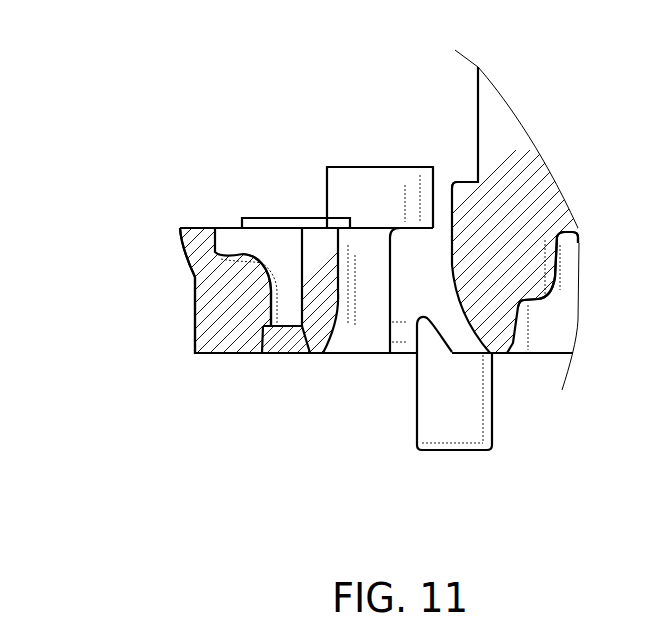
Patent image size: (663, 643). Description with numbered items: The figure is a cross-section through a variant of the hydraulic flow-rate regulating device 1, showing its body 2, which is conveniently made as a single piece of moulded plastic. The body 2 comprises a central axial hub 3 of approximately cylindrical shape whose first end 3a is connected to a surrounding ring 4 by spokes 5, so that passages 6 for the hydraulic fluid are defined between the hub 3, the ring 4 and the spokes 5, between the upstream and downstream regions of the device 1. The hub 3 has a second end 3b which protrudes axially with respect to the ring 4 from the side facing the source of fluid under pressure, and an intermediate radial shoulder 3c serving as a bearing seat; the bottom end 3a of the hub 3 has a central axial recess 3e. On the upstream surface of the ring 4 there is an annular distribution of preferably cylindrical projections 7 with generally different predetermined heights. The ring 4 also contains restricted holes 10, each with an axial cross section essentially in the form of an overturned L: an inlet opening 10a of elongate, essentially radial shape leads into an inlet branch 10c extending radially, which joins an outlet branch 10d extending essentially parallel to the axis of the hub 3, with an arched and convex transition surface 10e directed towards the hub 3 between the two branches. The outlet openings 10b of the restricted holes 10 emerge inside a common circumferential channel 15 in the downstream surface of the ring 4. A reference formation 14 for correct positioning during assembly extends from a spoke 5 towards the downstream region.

The hydraulic flow-rate regulating device 1 is at (277, 201).
The body 2 is at (195, 318).
The central axial hub 3 is at (478, 120).
The first end of hub 3a is at (515, 265).
The second end of hub 3b is at (505, 133).
The intermediate radial shoulder 3c is at (470, 182).
The central axial recess 3e is at (530, 303).
The ring 4 is at (243, 355).
The spokes 5 is at (403, 308).
The passages 6 is at (362, 312).
The projections 7 is at (290, 217).
The restricted holes 10 is at (245, 201).
The inlet opening 10a is at (216, 226).
The outlet opening 10b is at (291, 355).
The inlet branch 10c is at (180, 229).
The outlet branch 10d is at (263, 318).
The transition surface 10e is at (256, 265).
The reference formation 14 is at (468, 422).
The circumferential channel 15 is at (276, 355).